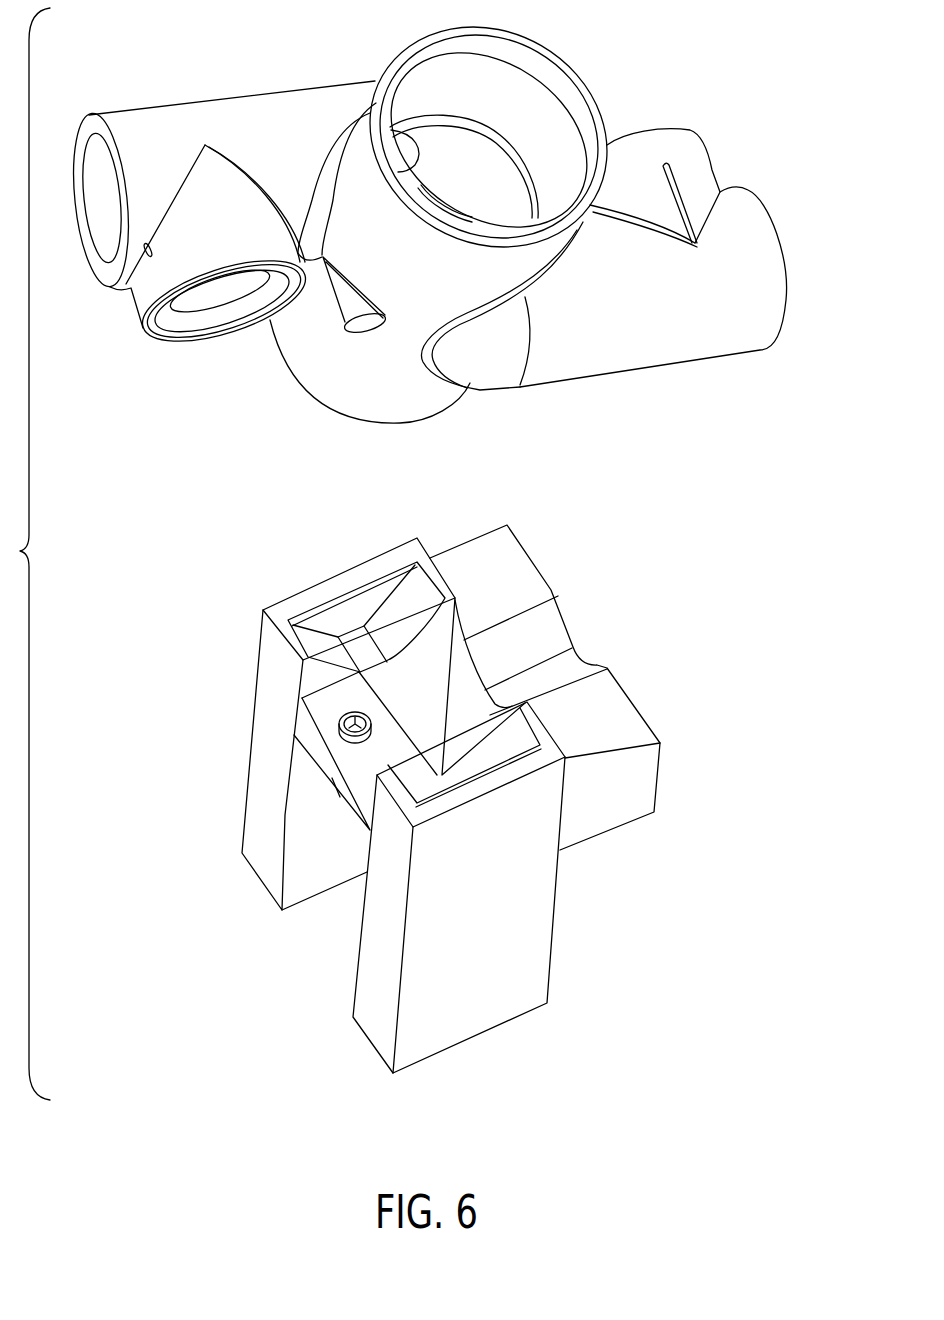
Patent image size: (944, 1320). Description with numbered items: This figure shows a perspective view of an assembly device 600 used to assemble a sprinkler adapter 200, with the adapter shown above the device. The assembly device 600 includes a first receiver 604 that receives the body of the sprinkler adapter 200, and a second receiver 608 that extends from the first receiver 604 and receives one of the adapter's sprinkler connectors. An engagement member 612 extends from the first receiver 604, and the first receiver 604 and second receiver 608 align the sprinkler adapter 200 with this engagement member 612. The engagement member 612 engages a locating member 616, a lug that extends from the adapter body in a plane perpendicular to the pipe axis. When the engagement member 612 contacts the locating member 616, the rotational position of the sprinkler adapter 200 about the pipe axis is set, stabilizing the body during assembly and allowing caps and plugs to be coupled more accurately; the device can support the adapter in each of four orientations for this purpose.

The sprinkler adapter 200 is at (426, 211).
The locating member 616 is at (348, 322).
The assembly device 600 is at (430, 799).
The first receiver 604 is at (367, 765).
The second receiver 608 is at (526, 627).
The engagement member 612 is at (340, 742).